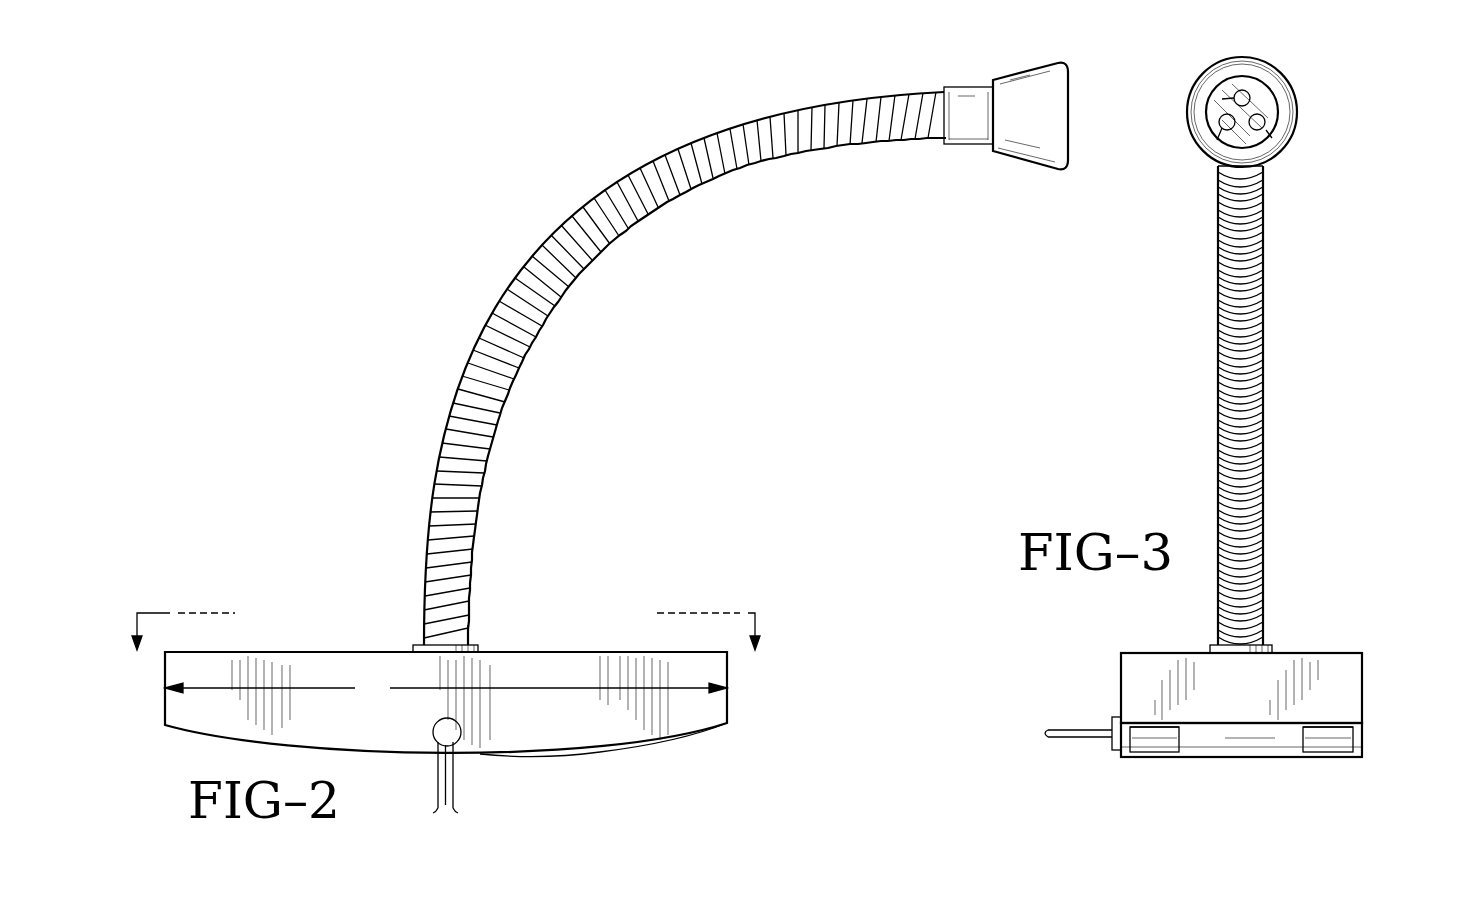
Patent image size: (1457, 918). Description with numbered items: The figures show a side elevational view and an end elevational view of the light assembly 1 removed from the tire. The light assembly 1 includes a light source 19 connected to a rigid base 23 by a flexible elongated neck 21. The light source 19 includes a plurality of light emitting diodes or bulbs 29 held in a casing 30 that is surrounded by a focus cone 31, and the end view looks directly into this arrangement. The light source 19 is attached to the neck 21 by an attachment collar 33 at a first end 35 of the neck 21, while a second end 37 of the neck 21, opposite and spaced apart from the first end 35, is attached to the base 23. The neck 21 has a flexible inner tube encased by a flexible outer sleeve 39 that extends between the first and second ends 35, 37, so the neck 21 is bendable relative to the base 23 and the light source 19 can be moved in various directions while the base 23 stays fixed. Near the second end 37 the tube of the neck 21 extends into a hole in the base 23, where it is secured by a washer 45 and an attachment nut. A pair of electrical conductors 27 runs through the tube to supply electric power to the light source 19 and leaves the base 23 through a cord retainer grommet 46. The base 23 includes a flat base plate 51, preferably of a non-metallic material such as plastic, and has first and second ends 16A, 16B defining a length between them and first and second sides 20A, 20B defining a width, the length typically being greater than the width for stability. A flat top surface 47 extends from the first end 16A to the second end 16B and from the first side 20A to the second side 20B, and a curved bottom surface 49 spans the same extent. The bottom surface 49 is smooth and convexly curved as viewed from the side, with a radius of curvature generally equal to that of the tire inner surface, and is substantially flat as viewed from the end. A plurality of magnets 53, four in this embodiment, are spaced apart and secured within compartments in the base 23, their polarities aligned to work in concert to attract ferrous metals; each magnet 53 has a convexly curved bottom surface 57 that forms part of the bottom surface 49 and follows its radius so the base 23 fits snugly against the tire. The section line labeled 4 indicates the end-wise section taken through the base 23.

In FIG. 2, the light assembly 1 is at (332, 440).
In FIG. 3, the light assembly 1 is at (1200, 388).
In FIG. 2, the section line 4 is at (444, 648).
In FIG. 2, the first end 16A is at (165, 703).
In FIG. 2, the second end 16B is at (728, 706).
In FIG. 3, the second end 16B is at (1243, 698).
In FIG. 2, the light source 19 is at (1018, 162).
In FIG. 3, the light source 19 is at (1278, 62).
In FIG. 2, the first side 20A is at (663, 718).
In FIG. 3, the first side 20A is at (1125, 678).
In FIG. 3, the second side 20B is at (1363, 668).
In FIG. 2, the flexible elongated neck 21 is at (512, 278).
In FIG. 3, the flexible elongated neck 21 is at (1216, 435).
In FIG. 2, the rigid base 23 is at (322, 658).
In FIG. 3, the rigid base 23 is at (1118, 660).
In FIG. 2, the electrical conductors 27 is at (455, 792).
In FIG. 3, the electrical conductors 27 is at (1062, 737).
In FIG. 3, the light emitting diodes or bulbs 29 is at (1208, 98).
In FIG. 3, the casing 30 is at (1268, 97).
In FIG. 2, the focus cone 31 is at (1022, 68).
In FIG. 3, the focus cone 31 is at (1222, 62).
In FIG. 2, the attachment collar 33 is at (958, 87).
In FIG. 2, the first end 35 is at (927, 147).
In FIG. 3, the first end 35 is at (1278, 170).
In FIG. 2, the second end 37 is at (480, 630).
In FIG. 3, the second end 37 is at (1280, 620).
In FIG. 2, the flexible outer sleeve 39 is at (430, 524).
In FIG. 3, the flexible outer sleeve 39 is at (1225, 484).
In FIG. 2, the washer 45 is at (416, 646).
In FIG. 3, the washer 45 is at (1212, 648).
In FIG. 2, the cord retainer grommet 46 is at (462, 736).
In FIG. 3, the cord retainer grommet 46 is at (1112, 748).
In FIG. 2, the flat top surface 47 is at (573, 655).
In FIG. 3, the flat top surface 47 is at (1147, 650).
In FIG. 2, the curved bottom surface 49 is at (556, 752).
In FIG. 3, the curved bottom surface 49 is at (1355, 752).
In FIG. 2, the flat base plate 51 is at (612, 660).
In FIG. 3, the flat base plate 51 is at (1340, 660).
In FIG. 3, the magnets 53 is at (1152, 724).
In FIG. 3, the convexly curved bottom surface of magnet 57 is at (1160, 752).